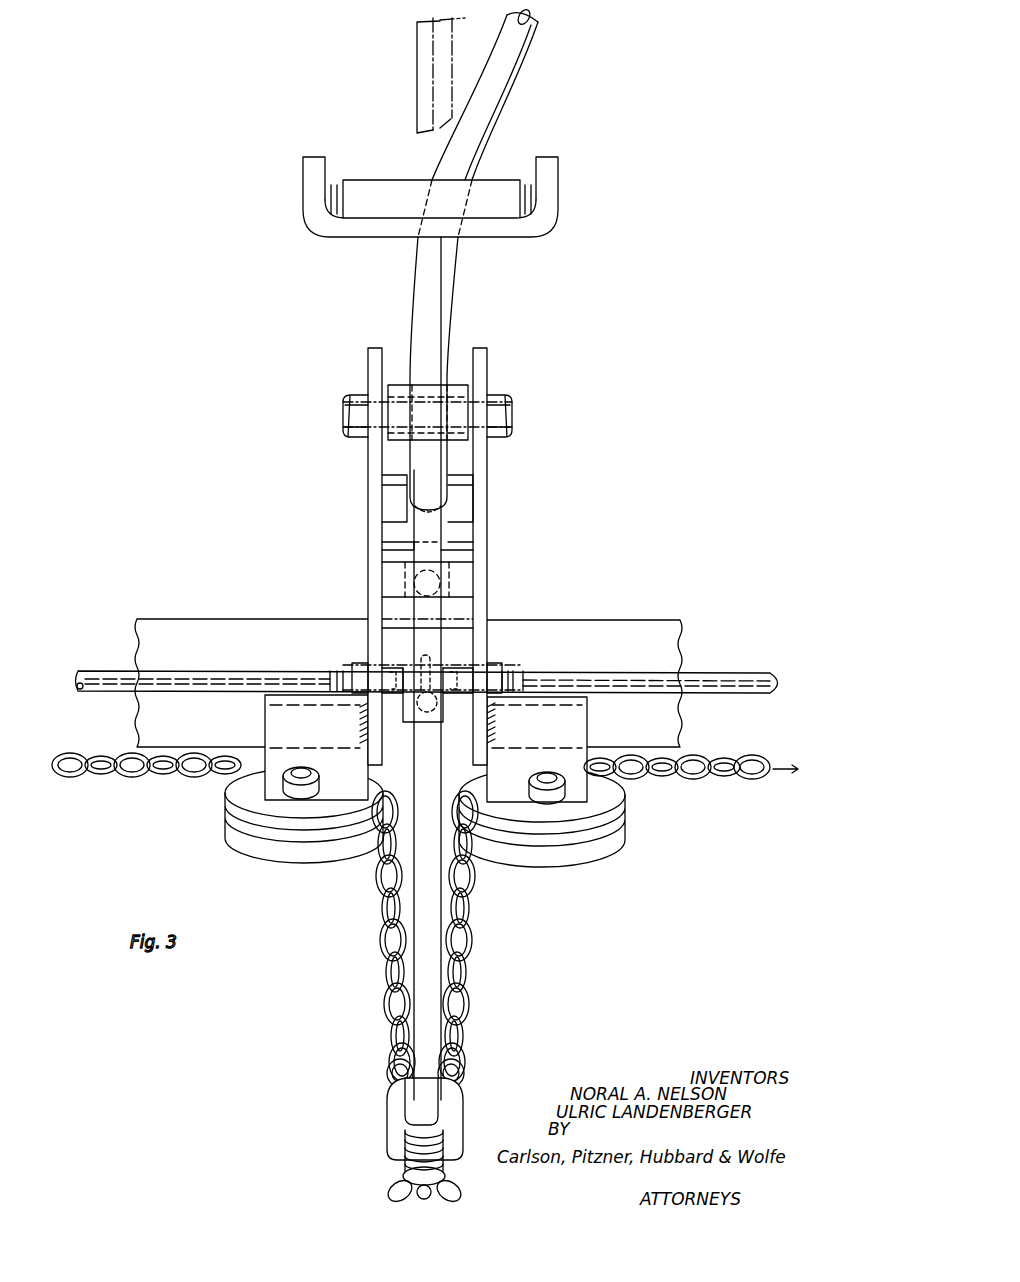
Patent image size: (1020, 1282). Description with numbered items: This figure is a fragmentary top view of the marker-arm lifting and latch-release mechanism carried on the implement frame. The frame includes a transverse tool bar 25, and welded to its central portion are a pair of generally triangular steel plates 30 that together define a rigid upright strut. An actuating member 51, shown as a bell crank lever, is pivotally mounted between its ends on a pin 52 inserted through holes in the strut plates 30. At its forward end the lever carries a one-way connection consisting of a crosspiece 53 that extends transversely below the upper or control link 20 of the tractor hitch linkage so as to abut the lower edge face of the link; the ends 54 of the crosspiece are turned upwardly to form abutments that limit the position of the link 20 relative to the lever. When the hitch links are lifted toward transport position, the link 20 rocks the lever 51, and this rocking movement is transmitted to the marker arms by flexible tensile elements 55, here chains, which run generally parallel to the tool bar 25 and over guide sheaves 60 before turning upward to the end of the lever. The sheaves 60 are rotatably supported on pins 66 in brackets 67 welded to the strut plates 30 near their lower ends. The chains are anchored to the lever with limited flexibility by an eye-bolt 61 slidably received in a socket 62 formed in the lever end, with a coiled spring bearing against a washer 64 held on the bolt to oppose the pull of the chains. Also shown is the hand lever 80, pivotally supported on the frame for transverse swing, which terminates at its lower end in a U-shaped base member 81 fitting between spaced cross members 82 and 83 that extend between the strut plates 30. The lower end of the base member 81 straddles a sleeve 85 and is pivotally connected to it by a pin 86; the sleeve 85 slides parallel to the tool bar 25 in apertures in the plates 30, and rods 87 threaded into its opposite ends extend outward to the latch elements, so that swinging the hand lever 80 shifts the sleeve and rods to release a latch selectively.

The upper or control link 20 is at (414, 32).
The hand lever 80 is at (490, 122).
The upturned ends of crosspiece 54 is at (550, 172).
The crosspiece 53 is at (393, 236).
The actuating member 51 is at (437, 309).
The pin 52 is at (512, 416).
The triangular steel plates 30 is at (368, 511).
The cross member 82 is at (465, 505).
The U-shaped base member 81 is at (452, 548).
The cross member 83 is at (465, 586).
The tool bar 25 is at (643, 620).
The sleeve 85 is at (502, 663).
The rods 87 is at (705, 672).
The brackets 67 is at (265, 715).
The pin 86 is at (425, 723).
The pins 66 is at (307, 775).
The flexible tensile elements 55 is at (135, 778).
The guide sheave 60 is at (265, 855).
The eye-bolt 61 is at (462, 1072).
The socket 62 is at (462, 1113).
The washer 64 is at (445, 1172).